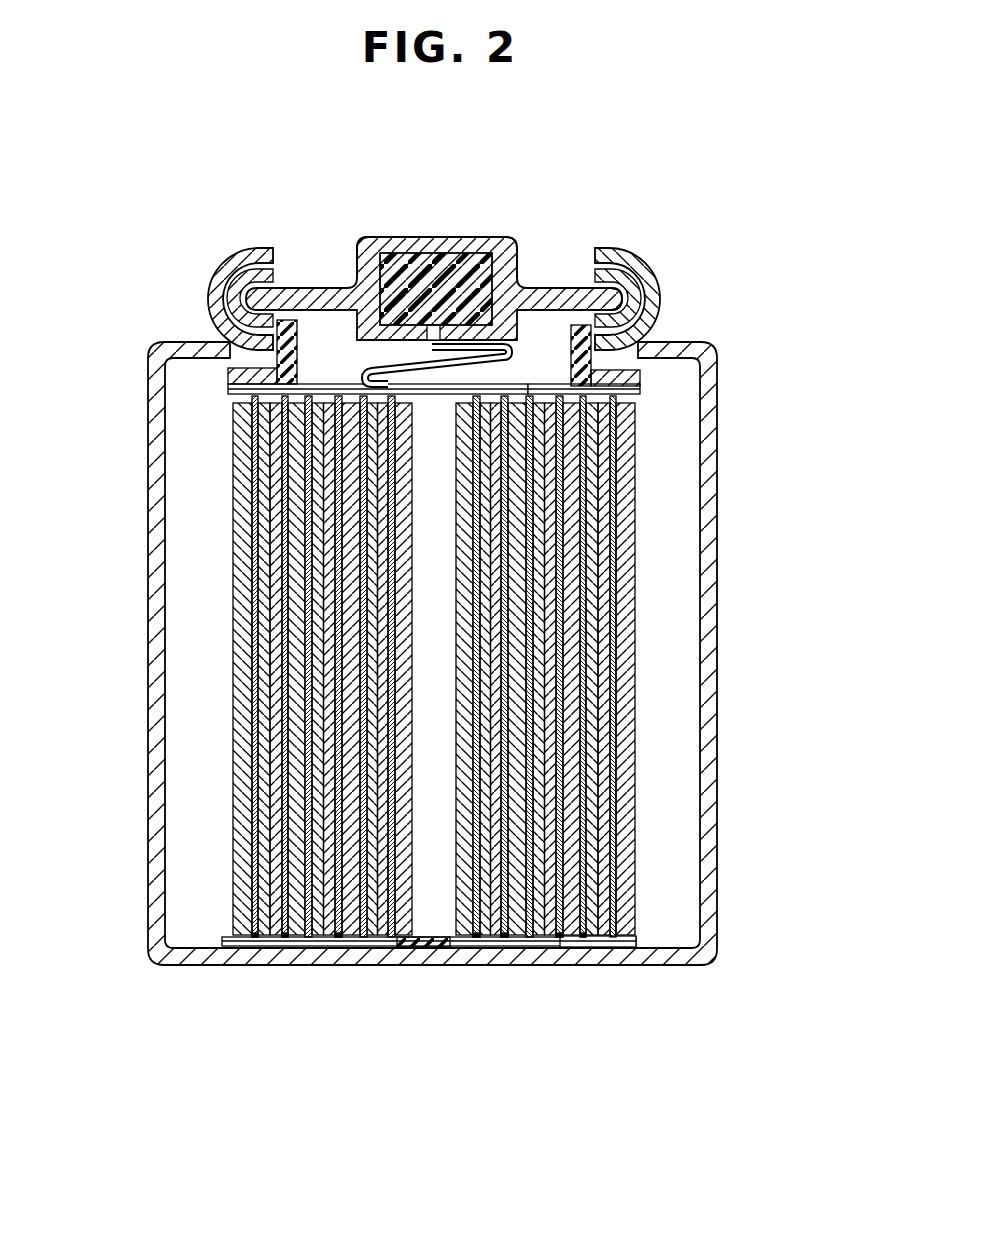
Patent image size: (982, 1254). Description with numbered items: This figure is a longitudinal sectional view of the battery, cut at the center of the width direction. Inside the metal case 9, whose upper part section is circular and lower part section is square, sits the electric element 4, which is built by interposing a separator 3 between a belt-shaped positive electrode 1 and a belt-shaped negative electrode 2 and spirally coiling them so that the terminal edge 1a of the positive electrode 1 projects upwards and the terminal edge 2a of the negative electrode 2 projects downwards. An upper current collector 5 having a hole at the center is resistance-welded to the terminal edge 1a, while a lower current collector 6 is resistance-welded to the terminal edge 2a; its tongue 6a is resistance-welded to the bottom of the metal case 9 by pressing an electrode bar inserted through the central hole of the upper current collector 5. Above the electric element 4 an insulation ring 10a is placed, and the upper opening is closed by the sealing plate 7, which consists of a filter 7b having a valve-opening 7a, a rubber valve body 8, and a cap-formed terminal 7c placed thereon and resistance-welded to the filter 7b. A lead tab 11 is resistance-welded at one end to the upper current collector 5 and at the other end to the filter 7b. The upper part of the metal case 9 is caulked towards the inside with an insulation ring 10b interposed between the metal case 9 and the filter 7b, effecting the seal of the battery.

The positive electrode 1 is at (255, 858).
The terminal edge of the positive electrode 1a is at (363, 445).
The negative electrode 2 is at (250, 905).
The terminal edge of the negative electrode 2a is at (245, 938).
The separator 3 is at (222, 939).
The electric element 4 is at (262, 420).
The upper current collector 5 is at (660, 398).
The lower current collector 6 is at (632, 940).
The tongue 6a is at (423, 948).
The sealing plate 7 is at (458, 240).
The valve-opening 7a is at (500, 262).
The filter 7b is at (635, 303).
The cap-formed terminal 7c is at (366, 240).
The rubber valve body 8 is at (400, 275).
The metal case 9 is at (717, 522).
The insulation ring 10a is at (235, 372).
The insulation ring 10b is at (240, 252).
The lead tab 11 is at (390, 362).